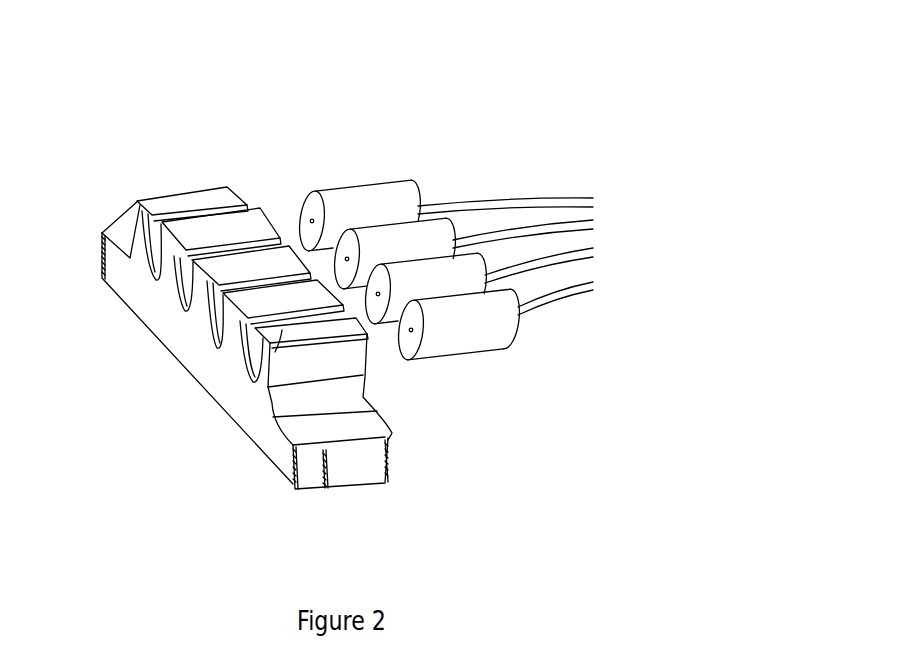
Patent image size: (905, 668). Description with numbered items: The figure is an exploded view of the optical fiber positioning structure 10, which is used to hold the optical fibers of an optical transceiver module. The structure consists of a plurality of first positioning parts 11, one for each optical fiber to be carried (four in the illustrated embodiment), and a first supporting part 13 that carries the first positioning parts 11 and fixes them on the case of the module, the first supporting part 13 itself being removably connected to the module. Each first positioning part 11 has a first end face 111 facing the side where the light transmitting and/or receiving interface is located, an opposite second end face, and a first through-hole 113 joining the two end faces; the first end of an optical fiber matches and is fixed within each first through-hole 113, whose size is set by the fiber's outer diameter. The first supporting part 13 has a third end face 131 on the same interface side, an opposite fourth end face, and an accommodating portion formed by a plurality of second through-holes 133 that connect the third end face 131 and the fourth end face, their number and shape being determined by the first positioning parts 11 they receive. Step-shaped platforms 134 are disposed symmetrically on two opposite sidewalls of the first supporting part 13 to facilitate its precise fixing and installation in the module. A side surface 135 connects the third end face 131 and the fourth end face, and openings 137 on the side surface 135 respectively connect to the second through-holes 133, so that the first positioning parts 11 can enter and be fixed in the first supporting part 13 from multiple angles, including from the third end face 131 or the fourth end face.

The optical fiber positioning structure 10 is at (84, 99).
The first positioning parts 11 is at (490, 335).
The first end face 111 is at (304, 212).
The first through-hole 113 is at (313, 226).
The first supporting part 13 is at (183, 350).
The third end face 131 is at (153, 311).
The second through-holes 133 is at (153, 257).
The step-shaped platforms 134 is at (377, 421).
The side surface 135 is at (282, 330).
The openings 137 is at (222, 204).